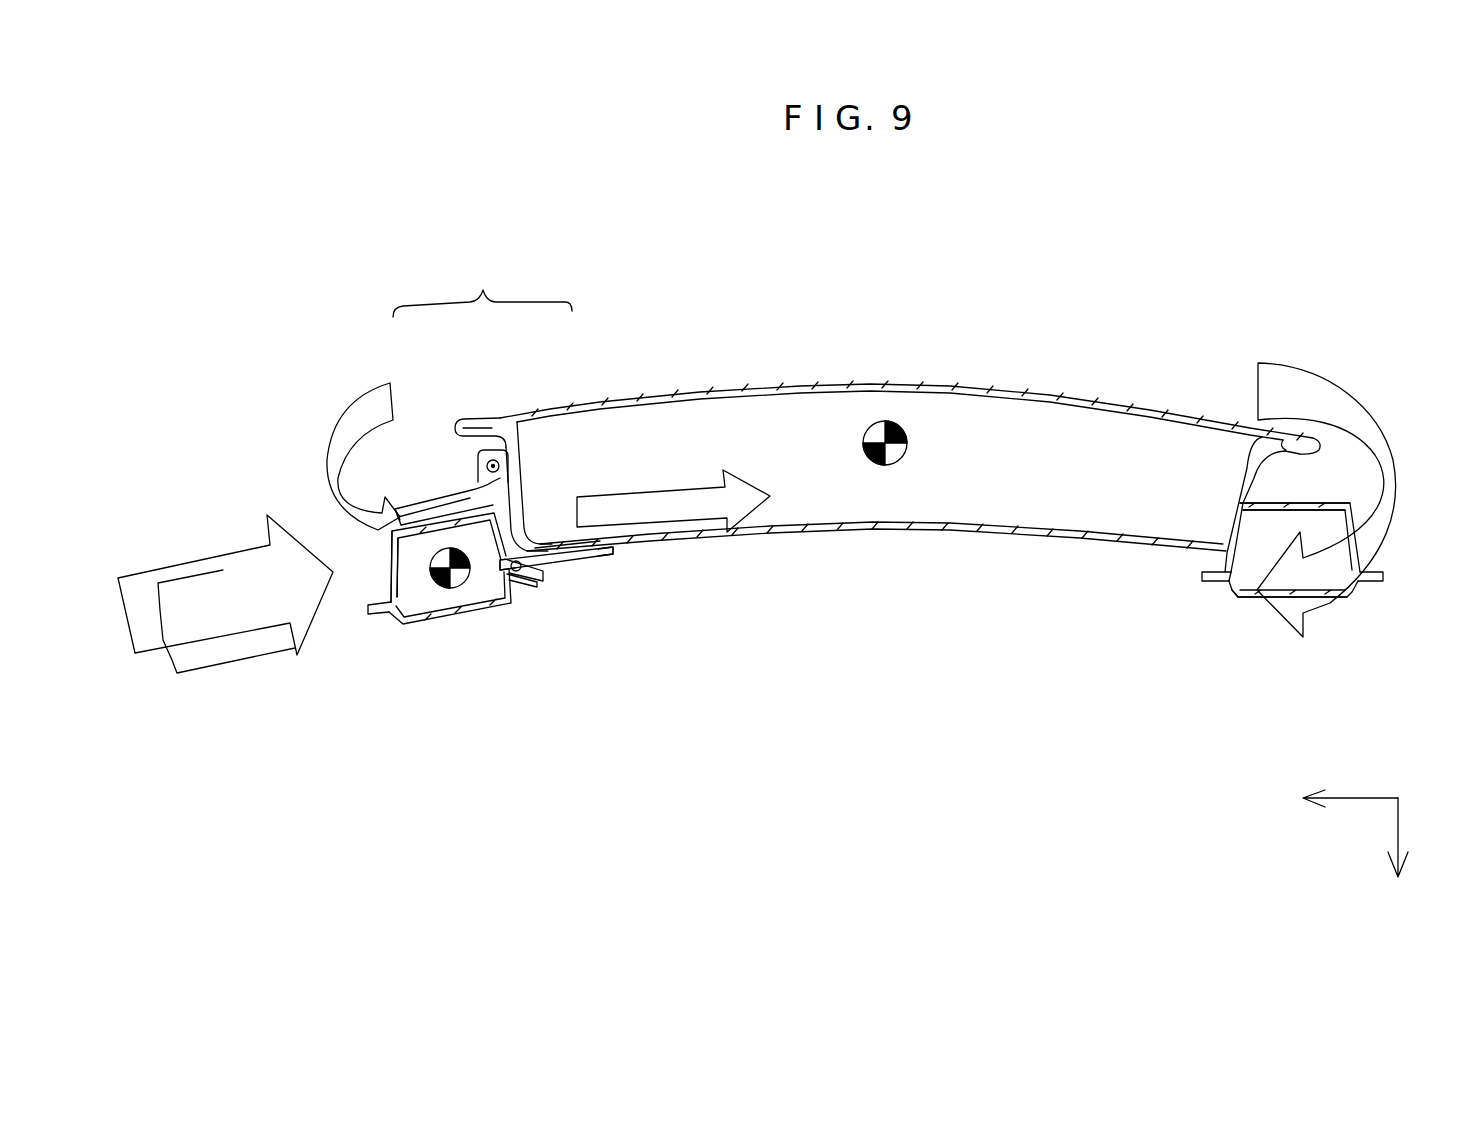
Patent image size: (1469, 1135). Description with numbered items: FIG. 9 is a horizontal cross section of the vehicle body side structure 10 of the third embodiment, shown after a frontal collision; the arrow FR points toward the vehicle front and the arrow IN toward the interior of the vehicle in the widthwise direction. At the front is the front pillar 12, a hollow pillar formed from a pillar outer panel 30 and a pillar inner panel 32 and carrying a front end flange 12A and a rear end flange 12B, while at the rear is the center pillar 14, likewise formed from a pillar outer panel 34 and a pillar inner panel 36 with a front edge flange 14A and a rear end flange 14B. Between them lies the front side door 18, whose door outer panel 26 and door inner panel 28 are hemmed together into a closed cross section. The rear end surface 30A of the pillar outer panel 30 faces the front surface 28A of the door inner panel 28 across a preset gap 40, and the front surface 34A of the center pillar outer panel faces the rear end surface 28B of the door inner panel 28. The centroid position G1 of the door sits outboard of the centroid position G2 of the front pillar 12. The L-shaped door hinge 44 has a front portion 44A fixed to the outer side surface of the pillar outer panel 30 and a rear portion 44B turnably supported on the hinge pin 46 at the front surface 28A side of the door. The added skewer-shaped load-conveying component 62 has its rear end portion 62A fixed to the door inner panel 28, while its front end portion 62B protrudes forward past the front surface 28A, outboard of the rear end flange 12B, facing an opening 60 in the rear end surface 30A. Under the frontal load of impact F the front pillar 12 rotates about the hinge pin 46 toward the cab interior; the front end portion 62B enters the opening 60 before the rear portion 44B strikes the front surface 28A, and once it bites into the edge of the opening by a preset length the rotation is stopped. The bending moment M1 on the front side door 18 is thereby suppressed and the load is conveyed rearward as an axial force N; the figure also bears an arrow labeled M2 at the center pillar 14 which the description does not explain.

The vehicle body side structure 10 is at (792, 345).
The front pillar 12 is at (425, 651).
The front end flange 12A is at (375, 625).
The rear end flange 12B is at (540, 574).
The center pillar 14 is at (1335, 620).
The front edge flange 14A is at (1208, 579).
The rear end flange 14B is at (1374, 584).
The front side door 18 is at (1029, 373).
The door outer panel 26 is at (868, 382).
The door inner panel 28 is at (914, 548).
The front surface 28A is at (530, 528).
The rear end surface 28B is at (1248, 466).
The pillar outer panel 30 is at (421, 507).
The rear end surface 30A is at (515, 492).
The pillar inner panel 32 is at (398, 632).
The pillar outer panel 34 is at (1337, 486).
The front surface 34A is at (1223, 551).
The pillar inner panel 36 is at (1238, 600).
The preset gap 40 is at (490, 562).
The door hinge 44 is at (482, 288).
The front portion 44A is at (411, 500).
The rear portion 44B is at (523, 472).
The hinge pin 46 is at (486, 452).
The opening 60 is at (523, 580).
The load-conveying component 62 is at (592, 568).
The rear end portion 62A is at (607, 556).
The front end portion 62B is at (500, 562).
The centroid position G1 is at (903, 459).
The centroid position G2 is at (463, 588).
The axial force N is at (668, 492).
The frontal load of impact F is at (223, 570).
The bending moment M1 is at (330, 467).
The moment M2 is at (1385, 422).
The front direction arrow FR is at (1322, 799).
The inward direction arrow IN is at (1391, 859).